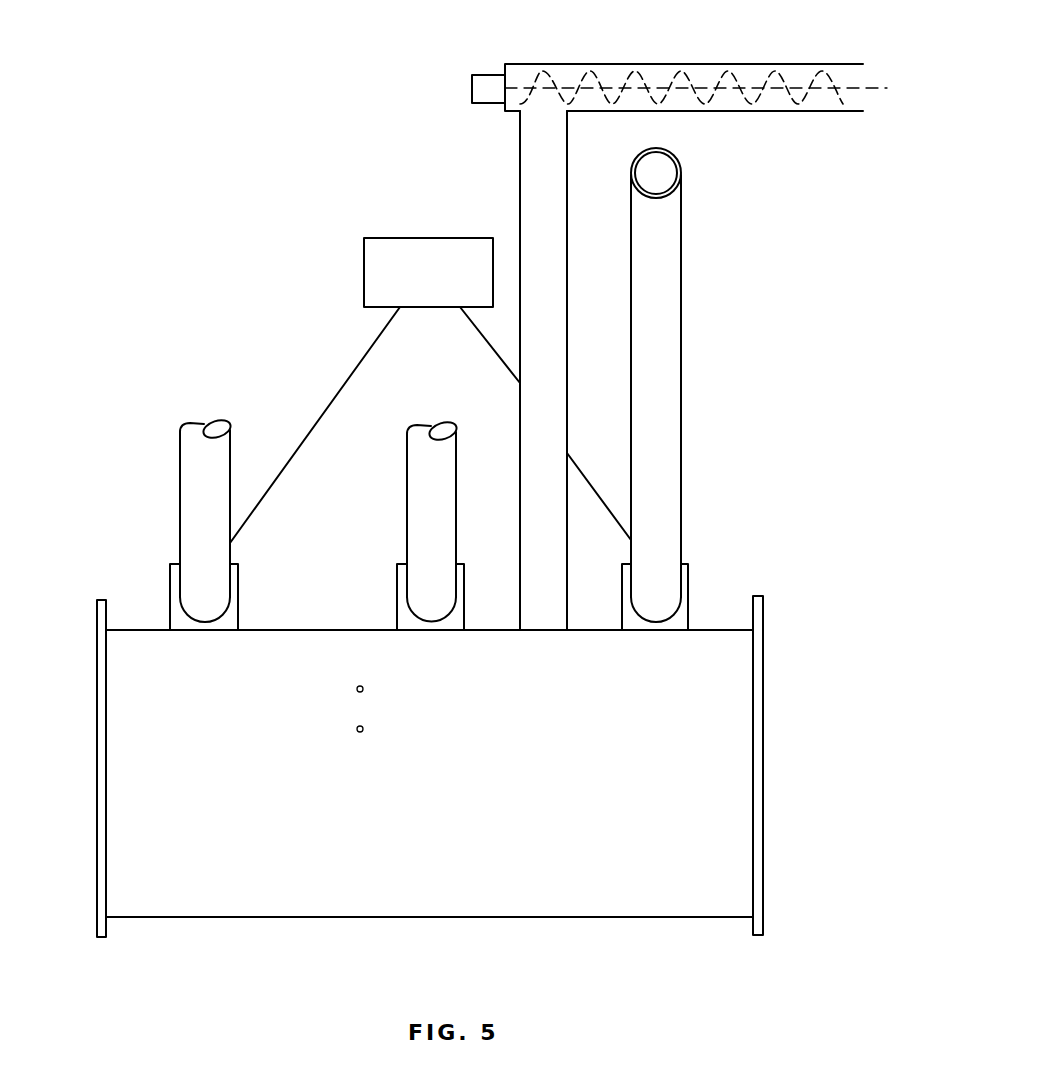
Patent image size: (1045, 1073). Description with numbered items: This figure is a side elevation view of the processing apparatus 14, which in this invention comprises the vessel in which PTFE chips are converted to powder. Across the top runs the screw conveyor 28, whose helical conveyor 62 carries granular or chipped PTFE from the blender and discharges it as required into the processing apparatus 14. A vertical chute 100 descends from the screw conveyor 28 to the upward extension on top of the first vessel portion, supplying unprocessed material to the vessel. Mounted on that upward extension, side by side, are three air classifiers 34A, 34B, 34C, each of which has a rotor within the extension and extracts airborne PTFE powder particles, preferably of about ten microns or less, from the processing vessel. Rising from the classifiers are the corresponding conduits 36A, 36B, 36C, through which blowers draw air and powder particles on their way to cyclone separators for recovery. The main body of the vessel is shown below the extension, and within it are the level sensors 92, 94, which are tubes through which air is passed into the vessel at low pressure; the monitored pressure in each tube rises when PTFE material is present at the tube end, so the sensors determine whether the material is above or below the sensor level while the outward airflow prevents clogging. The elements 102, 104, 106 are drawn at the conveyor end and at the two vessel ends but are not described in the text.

The processing apparatus 14 is at (266, 339).
The screw conveyor 28 is at (740, 111).
The air classifier 34A is at (170, 580).
The air classifier 34B is at (397, 580).
The air classifier 34C is at (690, 581).
The conduit 36A is at (180, 448).
The conduit 36B is at (407, 472).
The conduit 36C is at (681, 421).
The helical conveyor 62 is at (656, 64).
The level sensor 92 is at (359, 737).
The level sensor 94 is at (357, 693).
The vertical chute 100 is at (519, 160).
The motor 102 is at (472, 88).
The right end plate 104 is at (763, 797).
The left end plate 106 is at (97, 807).